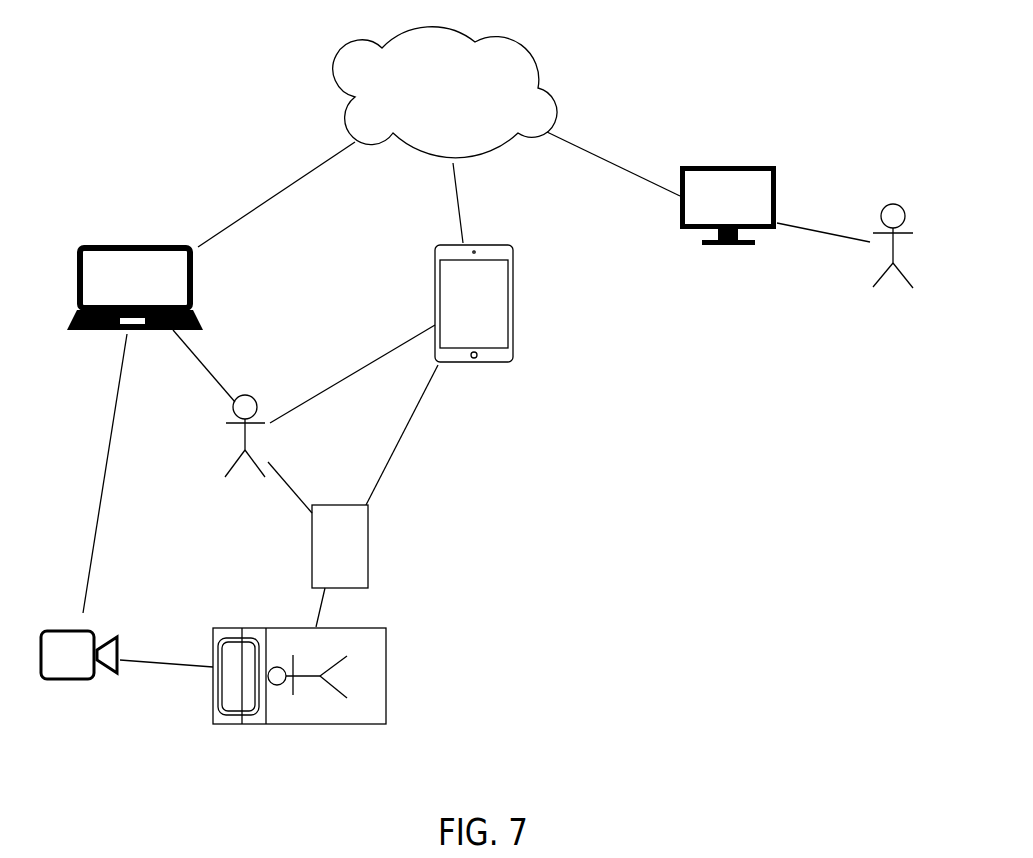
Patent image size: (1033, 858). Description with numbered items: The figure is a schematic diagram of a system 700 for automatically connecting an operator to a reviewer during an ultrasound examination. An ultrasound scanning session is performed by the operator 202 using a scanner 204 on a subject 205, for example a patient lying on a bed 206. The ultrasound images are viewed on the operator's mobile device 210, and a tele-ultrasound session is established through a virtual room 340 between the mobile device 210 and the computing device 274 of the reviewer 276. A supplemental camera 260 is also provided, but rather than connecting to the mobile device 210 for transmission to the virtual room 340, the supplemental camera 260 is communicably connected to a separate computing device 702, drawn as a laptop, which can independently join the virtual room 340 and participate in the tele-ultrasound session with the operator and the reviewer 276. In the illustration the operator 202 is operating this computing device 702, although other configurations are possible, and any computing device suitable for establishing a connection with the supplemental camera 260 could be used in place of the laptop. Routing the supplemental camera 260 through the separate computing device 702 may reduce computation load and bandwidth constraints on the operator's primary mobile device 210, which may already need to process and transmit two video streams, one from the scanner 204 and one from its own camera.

The system 700 is at (163, 98).
The virtual room 340 is at (520, 42).
The computing device 702 is at (136, 245).
The mobile device 210 is at (512, 278).
The computing device 274 is at (767, 167).
The reviewer 276 is at (912, 208).
The operator 202 is at (257, 402).
The scanner 204 is at (368, 563).
The bed 206 is at (388, 680).
The subject 205 is at (337, 700).
The supplemental camera 260 is at (75, 682).